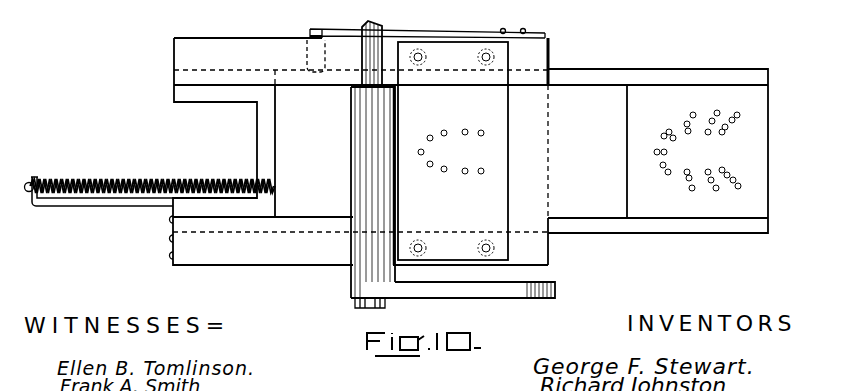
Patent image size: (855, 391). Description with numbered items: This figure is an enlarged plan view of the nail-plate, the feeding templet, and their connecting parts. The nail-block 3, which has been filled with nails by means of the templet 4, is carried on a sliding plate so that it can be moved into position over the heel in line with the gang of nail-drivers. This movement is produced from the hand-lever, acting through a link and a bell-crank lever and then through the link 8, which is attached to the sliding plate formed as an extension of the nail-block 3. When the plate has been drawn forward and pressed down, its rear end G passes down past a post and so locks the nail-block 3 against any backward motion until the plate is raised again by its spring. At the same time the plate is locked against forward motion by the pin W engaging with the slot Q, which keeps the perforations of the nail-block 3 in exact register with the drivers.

The pin W is at (311, 35).
The slot Q is at (338, 72).
The rear end of the sliding plate G is at (469, 151).
The templet 4 is at (440, 75).
The nail-block 3 is at (658, 151).
The link 8 is at (453, 305).